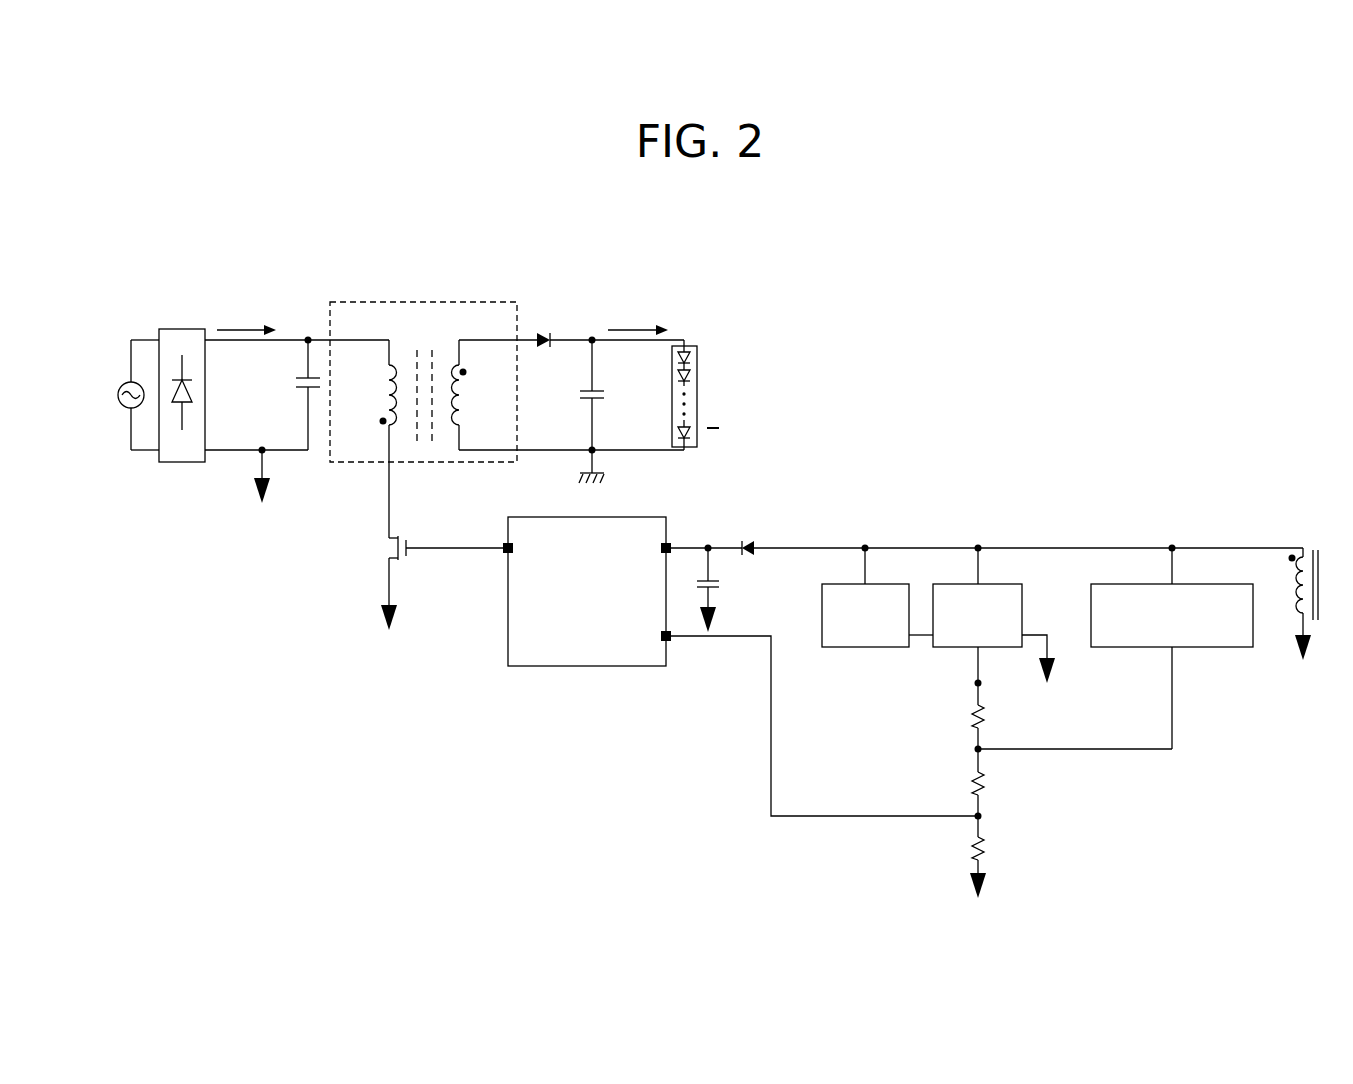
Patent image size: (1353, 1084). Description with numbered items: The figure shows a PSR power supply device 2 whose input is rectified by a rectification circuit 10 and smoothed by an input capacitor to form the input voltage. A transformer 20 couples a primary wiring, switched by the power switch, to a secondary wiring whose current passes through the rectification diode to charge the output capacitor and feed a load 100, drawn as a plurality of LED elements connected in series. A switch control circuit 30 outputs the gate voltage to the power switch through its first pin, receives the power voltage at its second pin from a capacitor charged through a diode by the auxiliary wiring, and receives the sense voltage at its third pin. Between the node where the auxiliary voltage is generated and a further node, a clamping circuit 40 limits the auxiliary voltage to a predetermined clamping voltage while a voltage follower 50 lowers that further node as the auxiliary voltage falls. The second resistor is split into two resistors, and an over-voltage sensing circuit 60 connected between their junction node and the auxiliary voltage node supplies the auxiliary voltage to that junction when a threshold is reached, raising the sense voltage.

The PSR power supply device 2 is at (658, 230).
The rectification circuit 10 is at (191, 329).
The transformer 20 is at (360, 302).
The switch control circuit 30 is at (588, 668).
The clamping circuit 40 is at (1024, 598).
The voltage follower 50 is at (866, 652).
The over-voltage sensing circuit 60 is at (1234, 652).
The load 100 is at (699, 355).